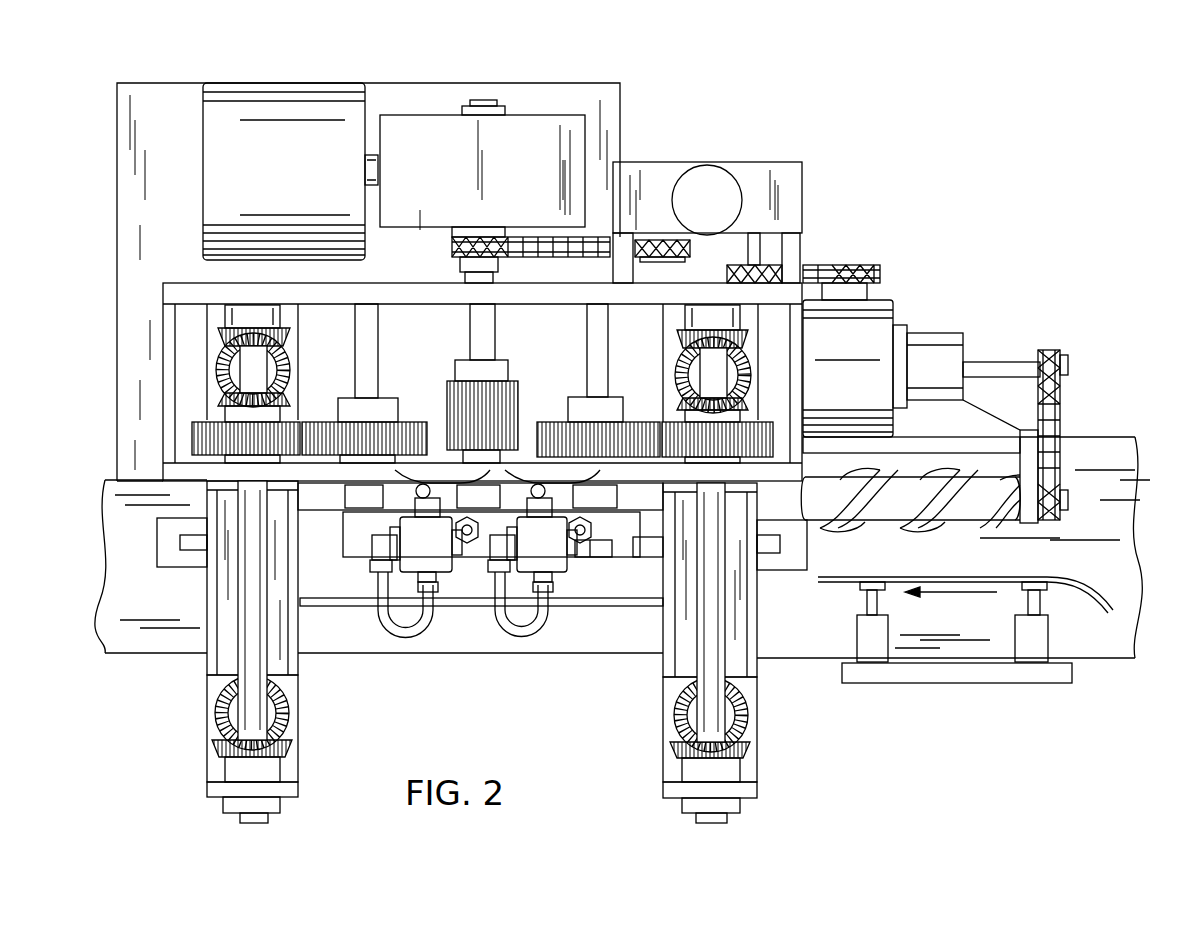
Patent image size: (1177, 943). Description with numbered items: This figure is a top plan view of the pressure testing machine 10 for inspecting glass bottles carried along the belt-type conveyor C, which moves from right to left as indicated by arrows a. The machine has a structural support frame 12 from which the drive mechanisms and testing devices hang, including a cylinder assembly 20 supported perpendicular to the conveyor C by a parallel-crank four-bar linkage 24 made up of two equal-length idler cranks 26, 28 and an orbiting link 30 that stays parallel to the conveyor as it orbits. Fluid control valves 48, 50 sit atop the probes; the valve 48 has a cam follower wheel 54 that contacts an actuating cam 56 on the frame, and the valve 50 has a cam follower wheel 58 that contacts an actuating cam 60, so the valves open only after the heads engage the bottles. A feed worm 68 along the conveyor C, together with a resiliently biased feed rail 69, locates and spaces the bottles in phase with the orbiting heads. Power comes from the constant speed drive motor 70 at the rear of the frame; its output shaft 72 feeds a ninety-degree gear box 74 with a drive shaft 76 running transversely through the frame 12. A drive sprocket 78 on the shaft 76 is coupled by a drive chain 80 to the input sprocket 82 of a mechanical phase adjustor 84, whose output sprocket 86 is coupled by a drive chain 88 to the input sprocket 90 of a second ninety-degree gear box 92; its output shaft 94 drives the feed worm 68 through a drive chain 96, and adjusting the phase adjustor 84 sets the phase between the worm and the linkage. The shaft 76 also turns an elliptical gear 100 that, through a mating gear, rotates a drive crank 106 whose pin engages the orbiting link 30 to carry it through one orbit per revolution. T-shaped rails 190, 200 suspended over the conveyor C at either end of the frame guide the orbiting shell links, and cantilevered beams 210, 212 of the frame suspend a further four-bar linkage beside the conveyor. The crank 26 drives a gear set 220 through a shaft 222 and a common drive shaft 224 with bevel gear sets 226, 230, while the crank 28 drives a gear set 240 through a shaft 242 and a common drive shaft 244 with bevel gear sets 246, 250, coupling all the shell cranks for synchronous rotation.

The pressure testing machine 10 is at (968, 266).
The structural support frame 12 is at (192, 288).
The cylinder assembly 20 is at (481, 613).
The parallel-crank four-bar linkage 24 is at (612, 550).
The idler crank 26 is at (612, 497).
The idler crank 28 is at (352, 505).
The orbiting link 30 is at (365, 548).
The fluid control valve 48 is at (546, 556).
The fluid control valve 50 is at (432, 556).
The cam follower wheel 54 is at (556, 484).
The actuating cam 56 is at (527, 470).
The cam follower wheel 58 is at (405, 483).
The actuating cam 60 is at (430, 470).
The feed worm 68 is at (930, 545).
The resiliently biased feed rail 69 is at (1073, 577).
The constant speed drive motor 70 is at (310, 95).
The output shaft 72 is at (378, 176).
The 90° gear box 74 is at (547, 128).
The drive shaft 76 is at (472, 348).
The drive sprocket 78 is at (453, 233).
The drive chain 80 is at (543, 237).
The input sprocket 82 is at (665, 240).
The mechanical phase adjustor 84 is at (750, 168).
The output sprocket 86 is at (768, 240).
The drive chain 88 is at (810, 266).
The input sprocket 90 is at (866, 268).
The 90° gear box 92 is at (853, 367).
The output shaft 94 is at (1008, 364).
The drive chain 96 is at (1058, 422).
The elliptical gear 100 is at (508, 400).
The drive crank 106 is at (502, 586).
The T-shaped rail 190 is at (790, 540).
The T-shaped rail 200 is at (163, 540).
The cantilevered beam 210 is at (663, 722).
The cantilevered beam 212 is at (213, 690).
The gear set 220 is at (653, 440).
The shaft 222 is at (588, 355).
The common drive shaft 224 is at (715, 620).
The bevel gear set 226 is at (745, 740).
The bevel gear set 230 is at (680, 352).
The gear set 240 is at (308, 440).
The shaft 242 is at (357, 358).
The common drive shaft 244 is at (250, 605).
The bevel gear set 246 is at (285, 745).
The bevel gear set 250 is at (285, 352).
The arrows a is at (950, 594).
The conveyor C is at (1128, 570).